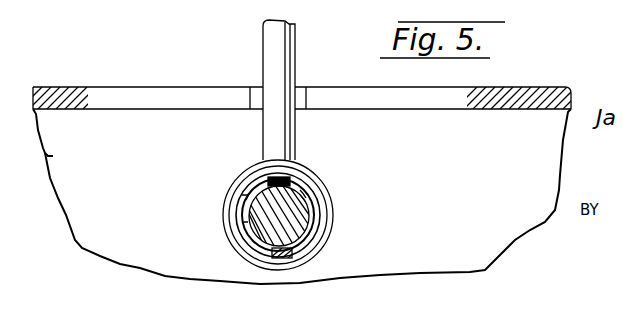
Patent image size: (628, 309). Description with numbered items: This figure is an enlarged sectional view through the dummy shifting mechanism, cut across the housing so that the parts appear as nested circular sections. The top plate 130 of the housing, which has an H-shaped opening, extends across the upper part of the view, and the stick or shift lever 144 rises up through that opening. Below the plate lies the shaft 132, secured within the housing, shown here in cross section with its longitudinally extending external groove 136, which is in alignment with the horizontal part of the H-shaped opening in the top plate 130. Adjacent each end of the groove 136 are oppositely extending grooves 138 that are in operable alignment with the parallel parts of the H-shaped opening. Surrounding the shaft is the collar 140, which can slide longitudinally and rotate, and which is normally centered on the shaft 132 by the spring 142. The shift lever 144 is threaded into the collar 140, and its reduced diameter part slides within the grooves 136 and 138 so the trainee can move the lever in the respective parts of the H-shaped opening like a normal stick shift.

The top plate 130 is at (541, 90).
The shaft 132 is at (260, 220).
The external groove 136 is at (289, 179).
The oppositely extending grooves 138 is at (248, 200).
The collar 140 is at (233, 238).
The spring 142 is at (330, 241).
The shift lever 144 is at (273, 47).